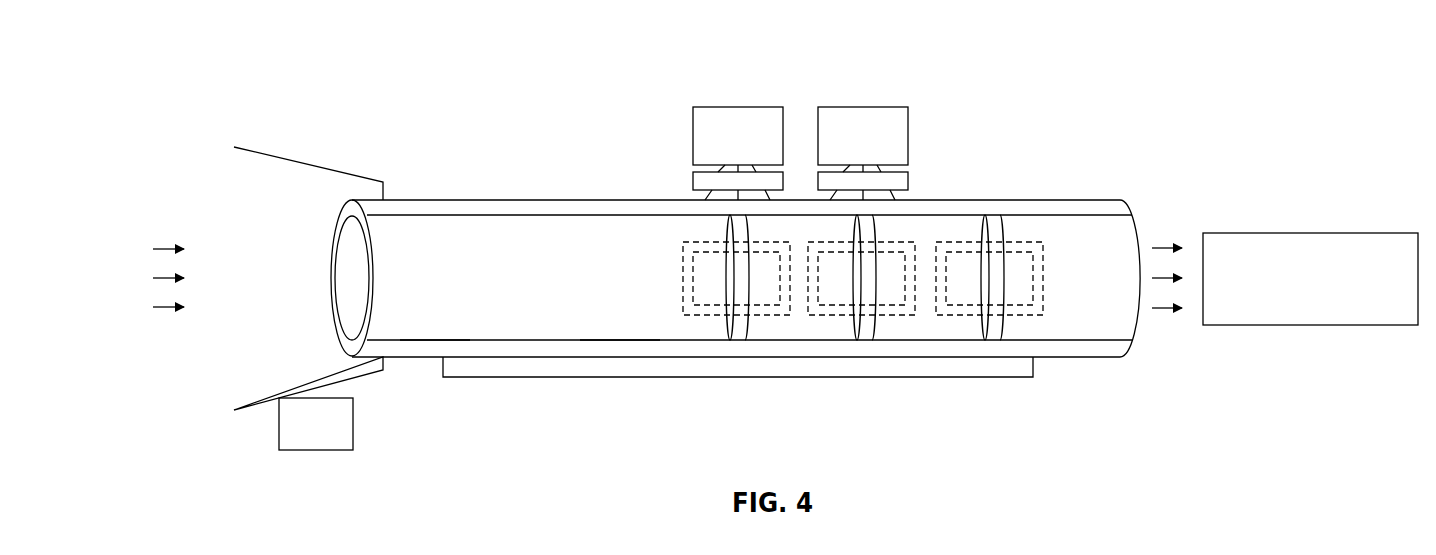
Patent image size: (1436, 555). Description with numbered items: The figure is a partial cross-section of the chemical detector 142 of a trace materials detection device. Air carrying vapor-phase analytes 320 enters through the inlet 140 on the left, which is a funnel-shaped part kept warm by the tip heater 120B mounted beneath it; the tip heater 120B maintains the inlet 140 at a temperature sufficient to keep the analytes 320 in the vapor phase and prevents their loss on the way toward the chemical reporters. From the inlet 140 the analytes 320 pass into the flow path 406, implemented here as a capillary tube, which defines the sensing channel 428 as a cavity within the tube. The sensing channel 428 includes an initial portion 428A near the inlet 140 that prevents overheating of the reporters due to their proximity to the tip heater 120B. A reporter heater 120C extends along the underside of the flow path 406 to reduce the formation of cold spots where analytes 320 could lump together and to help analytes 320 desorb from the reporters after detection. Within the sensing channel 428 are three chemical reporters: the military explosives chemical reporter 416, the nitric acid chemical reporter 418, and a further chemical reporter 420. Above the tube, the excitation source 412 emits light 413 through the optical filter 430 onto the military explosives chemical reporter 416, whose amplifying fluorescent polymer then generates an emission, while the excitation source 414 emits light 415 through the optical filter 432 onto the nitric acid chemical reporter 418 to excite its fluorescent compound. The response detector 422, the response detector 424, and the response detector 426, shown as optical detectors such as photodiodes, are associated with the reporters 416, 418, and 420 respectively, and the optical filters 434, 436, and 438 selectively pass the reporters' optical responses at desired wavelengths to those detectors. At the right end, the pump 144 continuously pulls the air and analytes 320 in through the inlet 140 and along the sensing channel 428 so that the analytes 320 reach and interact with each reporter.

The inlet 140 is at (308, 163).
The tip heater 120B is at (279, 418).
The reporter heater 120C is at (512, 366).
The chemical detector 142 is at (606, 52).
The pump 144 is at (1275, 233).
The vapor-phase analytes 320 is at (193, 237).
The flow path 406 is at (453, 200).
The excitation source 412 is at (738, 107).
The light 413 is at (668, 163).
The excitation source 414 is at (888, 107).
The light 415 is at (933, 163).
The military explosives chemical reporter 416 is at (740, 332).
The nitric acid chemical reporter 418 is at (865, 332).
The chemical reporter 420 is at (992, 332).
The response detector 422 is at (707, 287).
The response detector 424 is at (830, 287).
The response detector 426 is at (958, 287).
The sensing channel 428 is at (620, 318).
The initial portion 428A is at (432, 333).
The optical filter 430 is at (693, 180).
The optical filter 432 is at (908, 180).
The optical filter 434 is at (683, 270).
The optical filter 436 is at (848, 243).
The optical filter 438 is at (1044, 278).